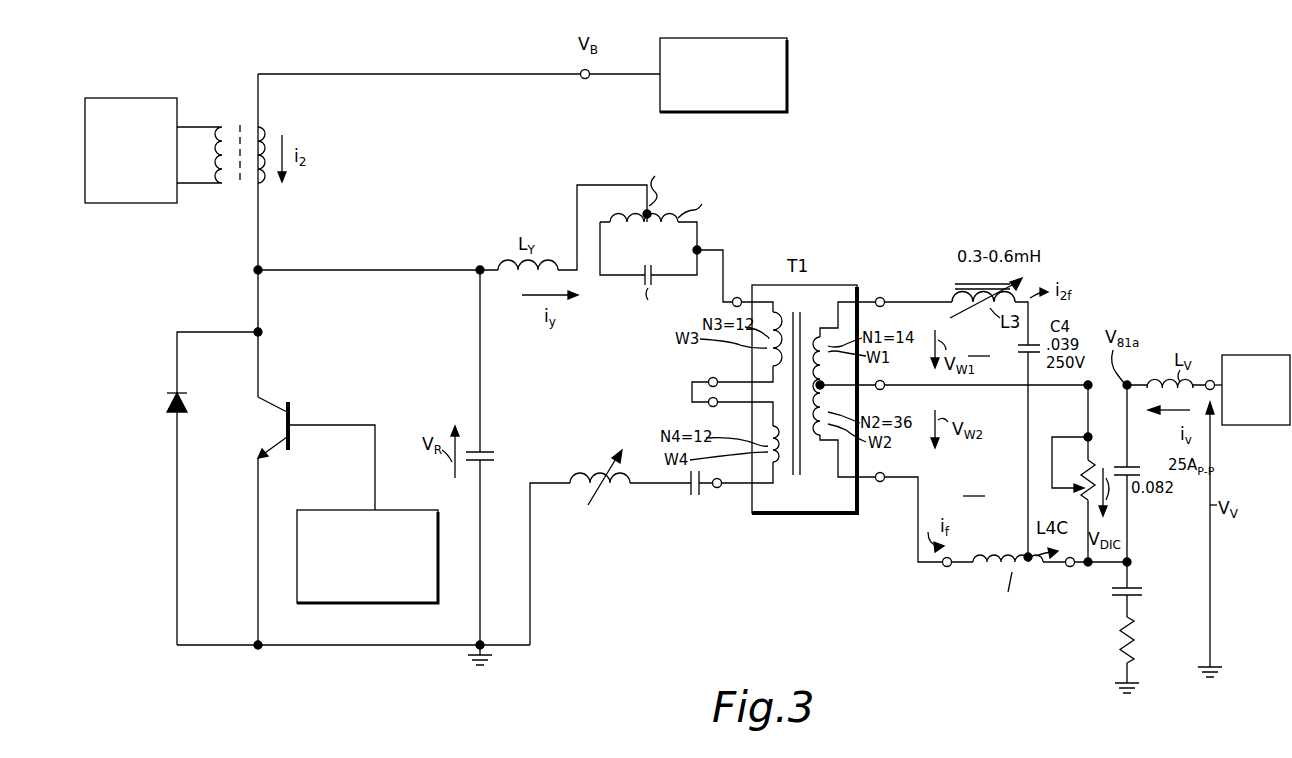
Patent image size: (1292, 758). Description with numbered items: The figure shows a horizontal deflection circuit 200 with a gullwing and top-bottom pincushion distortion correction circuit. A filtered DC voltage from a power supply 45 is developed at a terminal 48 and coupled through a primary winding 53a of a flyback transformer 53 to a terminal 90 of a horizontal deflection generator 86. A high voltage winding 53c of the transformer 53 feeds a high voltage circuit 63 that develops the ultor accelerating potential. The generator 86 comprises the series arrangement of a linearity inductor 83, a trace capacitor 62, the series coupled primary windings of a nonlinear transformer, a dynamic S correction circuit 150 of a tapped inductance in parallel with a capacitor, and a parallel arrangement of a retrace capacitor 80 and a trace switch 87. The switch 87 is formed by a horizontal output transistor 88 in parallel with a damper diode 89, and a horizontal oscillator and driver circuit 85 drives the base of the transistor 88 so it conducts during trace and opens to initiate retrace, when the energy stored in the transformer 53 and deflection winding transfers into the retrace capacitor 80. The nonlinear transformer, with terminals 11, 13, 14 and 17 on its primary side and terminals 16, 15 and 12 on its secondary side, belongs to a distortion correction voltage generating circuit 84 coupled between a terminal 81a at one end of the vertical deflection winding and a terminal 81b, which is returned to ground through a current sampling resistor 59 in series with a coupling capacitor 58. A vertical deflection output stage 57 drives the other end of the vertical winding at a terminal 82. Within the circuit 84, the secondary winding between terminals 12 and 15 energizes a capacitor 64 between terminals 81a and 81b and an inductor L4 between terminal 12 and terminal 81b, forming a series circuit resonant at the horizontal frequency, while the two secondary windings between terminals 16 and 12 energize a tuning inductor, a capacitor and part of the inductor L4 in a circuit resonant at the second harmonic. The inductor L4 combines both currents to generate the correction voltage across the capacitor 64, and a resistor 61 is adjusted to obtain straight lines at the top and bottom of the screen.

The power supply 45 is at (787, 100).
The terminal 48 is at (585, 58).
The horizontal output or flyback transformer 53 is at (246, 151).
The primary winding 53a is at (266, 127).
The high voltage winding 53c is at (224, 128).
The vertical deflection output stage 57 is at (1258, 355).
The coupling capacitor 58 is at (1142, 592).
The current sampling resistor 59 is at (1134, 640).
The resistor 61 is at (1092, 460).
The trace capacitor 62 is at (695, 497).
The high voltage circuit 63 is at (160, 203).
The capacitor 64 is at (1130, 462).
The retrace capacitor 80 is at (495, 458).
The terminal 81a is at (1129, 383).
The terminal 81b is at (1130, 560).
The terminal 82 is at (1208, 380).
The linearity inductor 83 is at (590, 470).
The distortion correction voltage generating circuit 84 is at (1058, 432).
The horizontal oscillator and driver circuit 85 is at (300, 510).
The horizontal deflection generator 86 is at (460, 636).
The trace switch 87 is at (283, 427).
The horizontal output transistor 88 is at (292, 412).
The damper diode 89 is at (187, 400).
The terminal 90 is at (262, 268).
The dynamic S correction circuit 150 is at (650, 258).
The horizontal deflection circuit 200 is at (444, 680).
The terminal 11 is at (713, 377).
The terminal 12 is at (880, 482).
The terminal 13 is at (714, 407).
The terminal 14 is at (717, 478).
The terminal 15 is at (883, 381).
The terminal 16 is at (881, 297).
The terminal 17 is at (739, 297).
The inductor L4 is at (1009, 581).